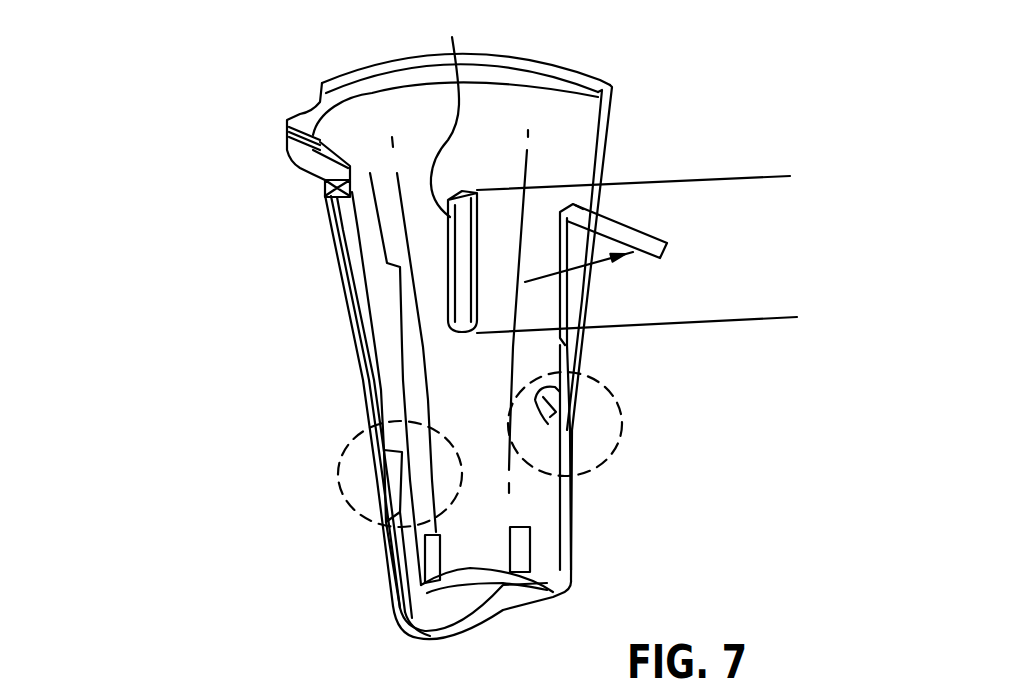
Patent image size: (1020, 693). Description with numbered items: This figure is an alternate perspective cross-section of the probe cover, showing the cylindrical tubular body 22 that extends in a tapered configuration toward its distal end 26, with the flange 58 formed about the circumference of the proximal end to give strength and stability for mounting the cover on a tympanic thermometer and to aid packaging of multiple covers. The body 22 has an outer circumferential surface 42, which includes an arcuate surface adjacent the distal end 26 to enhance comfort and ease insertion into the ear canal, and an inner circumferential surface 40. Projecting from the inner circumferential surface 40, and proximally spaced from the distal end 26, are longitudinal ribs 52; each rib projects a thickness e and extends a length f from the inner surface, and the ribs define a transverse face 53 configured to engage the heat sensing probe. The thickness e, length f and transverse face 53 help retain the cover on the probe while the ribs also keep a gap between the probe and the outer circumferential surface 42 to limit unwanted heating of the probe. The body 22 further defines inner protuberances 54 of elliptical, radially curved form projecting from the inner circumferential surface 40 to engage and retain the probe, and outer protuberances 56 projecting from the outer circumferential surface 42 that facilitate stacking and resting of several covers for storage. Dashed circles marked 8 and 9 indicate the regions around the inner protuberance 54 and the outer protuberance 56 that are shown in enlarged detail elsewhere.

The tubular body 22 is at (230, 316).
The distal end 26 is at (403, 593).
The inner circumferential surface 40 is at (543, 517).
The outer circumferential surface 42 is at (385, 262).
The longitudinal ribs 52 is at (460, 83).
The transverse face 53 is at (463, 290).
The inner protuberances 54 is at (532, 400).
The outer protuberances 56 is at (395, 478).
The flange 58 is at (302, 158).
The thickness e is at (667, 243).
The length f is at (777, 315).
The detail view 8 region 8 is at (622, 423).
The detail view 9 region 9 is at (337, 478).